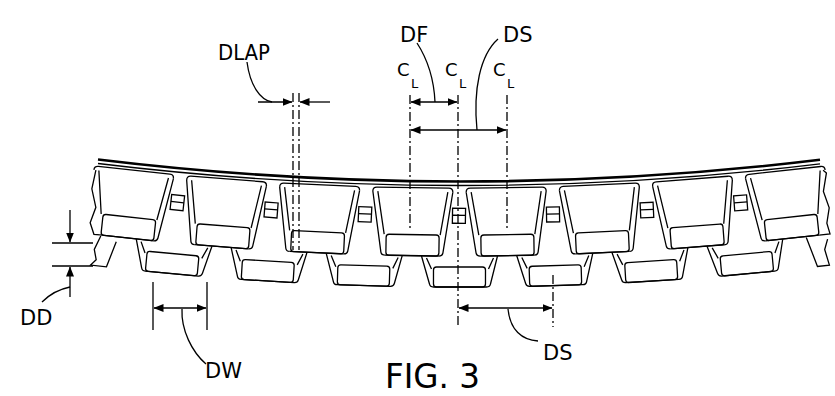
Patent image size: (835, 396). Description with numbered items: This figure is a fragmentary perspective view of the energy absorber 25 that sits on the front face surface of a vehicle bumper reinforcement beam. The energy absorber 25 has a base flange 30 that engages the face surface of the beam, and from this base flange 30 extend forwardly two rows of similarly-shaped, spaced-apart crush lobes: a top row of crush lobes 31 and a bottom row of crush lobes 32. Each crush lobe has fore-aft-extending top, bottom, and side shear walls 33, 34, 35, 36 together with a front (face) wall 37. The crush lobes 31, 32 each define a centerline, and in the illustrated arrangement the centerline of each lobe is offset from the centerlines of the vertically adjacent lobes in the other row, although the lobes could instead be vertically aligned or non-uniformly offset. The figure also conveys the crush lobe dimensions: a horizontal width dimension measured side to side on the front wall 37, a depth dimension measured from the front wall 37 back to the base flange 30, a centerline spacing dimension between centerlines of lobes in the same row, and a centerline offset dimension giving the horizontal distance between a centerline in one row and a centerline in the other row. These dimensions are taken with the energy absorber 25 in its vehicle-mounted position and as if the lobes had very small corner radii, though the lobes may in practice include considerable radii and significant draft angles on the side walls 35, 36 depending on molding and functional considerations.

The energy absorber 25 is at (459, 213).
The base flange 30 is at (183, 170).
The top row crush lobes 31 is at (318, 207).
The bottom row crush lobes 32 is at (364, 277).
The top shear wall 33 is at (685, 196).
The bottom shear wall 34 is at (695, 248).
The side shear wall 35 is at (652, 218).
The side shear wall 36 is at (727, 215).
The front wall 37 is at (694, 234).